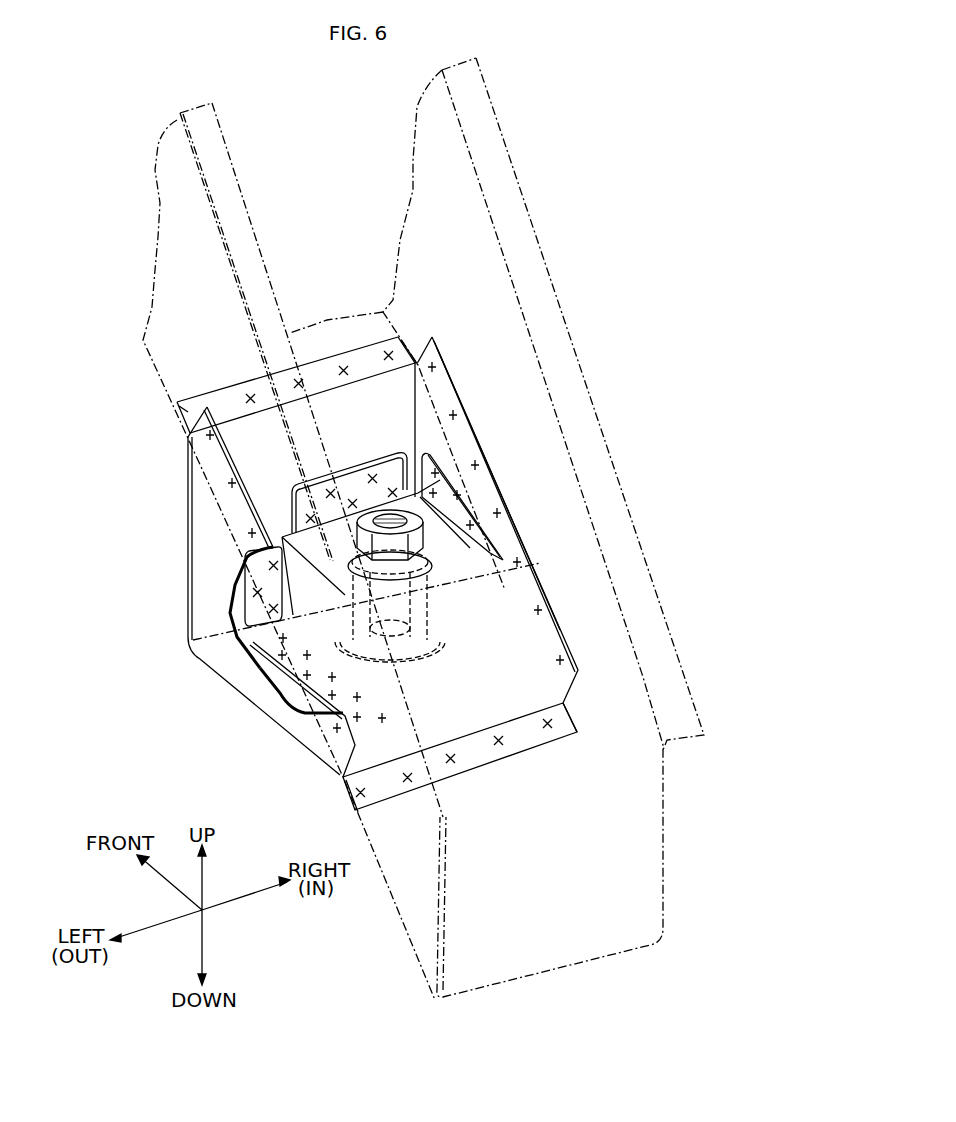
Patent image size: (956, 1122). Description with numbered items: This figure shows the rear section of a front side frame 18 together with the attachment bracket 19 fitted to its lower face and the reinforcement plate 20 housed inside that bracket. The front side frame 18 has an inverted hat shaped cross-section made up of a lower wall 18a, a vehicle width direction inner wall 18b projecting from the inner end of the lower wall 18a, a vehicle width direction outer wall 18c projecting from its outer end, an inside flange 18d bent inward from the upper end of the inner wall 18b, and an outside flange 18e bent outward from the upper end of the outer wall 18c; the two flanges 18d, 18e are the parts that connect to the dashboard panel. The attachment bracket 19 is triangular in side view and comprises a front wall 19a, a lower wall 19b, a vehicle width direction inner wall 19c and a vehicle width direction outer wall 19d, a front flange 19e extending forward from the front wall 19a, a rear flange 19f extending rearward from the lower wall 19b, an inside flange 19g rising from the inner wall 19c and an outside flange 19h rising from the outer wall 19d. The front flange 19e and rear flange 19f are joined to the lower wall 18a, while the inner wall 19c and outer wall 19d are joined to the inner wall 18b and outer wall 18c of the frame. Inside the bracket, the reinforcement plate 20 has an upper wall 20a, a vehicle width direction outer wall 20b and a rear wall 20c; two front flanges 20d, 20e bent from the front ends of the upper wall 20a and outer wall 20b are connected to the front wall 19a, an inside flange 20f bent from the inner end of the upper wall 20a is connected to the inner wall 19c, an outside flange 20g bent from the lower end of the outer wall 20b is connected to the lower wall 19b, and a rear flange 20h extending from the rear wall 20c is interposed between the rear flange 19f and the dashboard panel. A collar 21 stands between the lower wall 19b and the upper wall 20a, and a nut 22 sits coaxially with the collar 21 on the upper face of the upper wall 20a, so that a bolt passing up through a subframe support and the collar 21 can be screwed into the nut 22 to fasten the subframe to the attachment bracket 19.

The front side frame 18 is at (384, 529).
The lower wall 18a is at (327, 320).
The vehicle width direction inner wall 18b is at (428, 207).
The vehicle width direction outer wall 18c is at (170, 253).
The inside flange 18d is at (585, 382).
The outside flange 18e is at (230, 302).
The attachment bracket 19 is at (332, 570).
The front wall 19a is at (248, 430).
The lower wall 19b is at (290, 712).
The vehicle width direction inner wall 19c is at (432, 420).
The vehicle width direction outer wall 19d is at (207, 525).
The front flange 19e is at (367, 360).
The rear flange 19f is at (380, 787).
The inside flange 19g is at (488, 492).
The outside flange 19h is at (217, 460).
The reinforcement plate 20 is at (383, 599).
The upper wall 20a is at (460, 558).
The vehicle width direction outer wall 20b is at (247, 663).
The rear wall 20c is at (522, 695).
The front flange 20d is at (323, 487).
The front flange 20e is at (253, 608).
The inside flange 20f is at (448, 473).
The outside flange 20g is at (297, 698).
The rear flange 20h is at (483, 750).
The collar 21 is at (440, 593).
The nut 22 is at (370, 510).